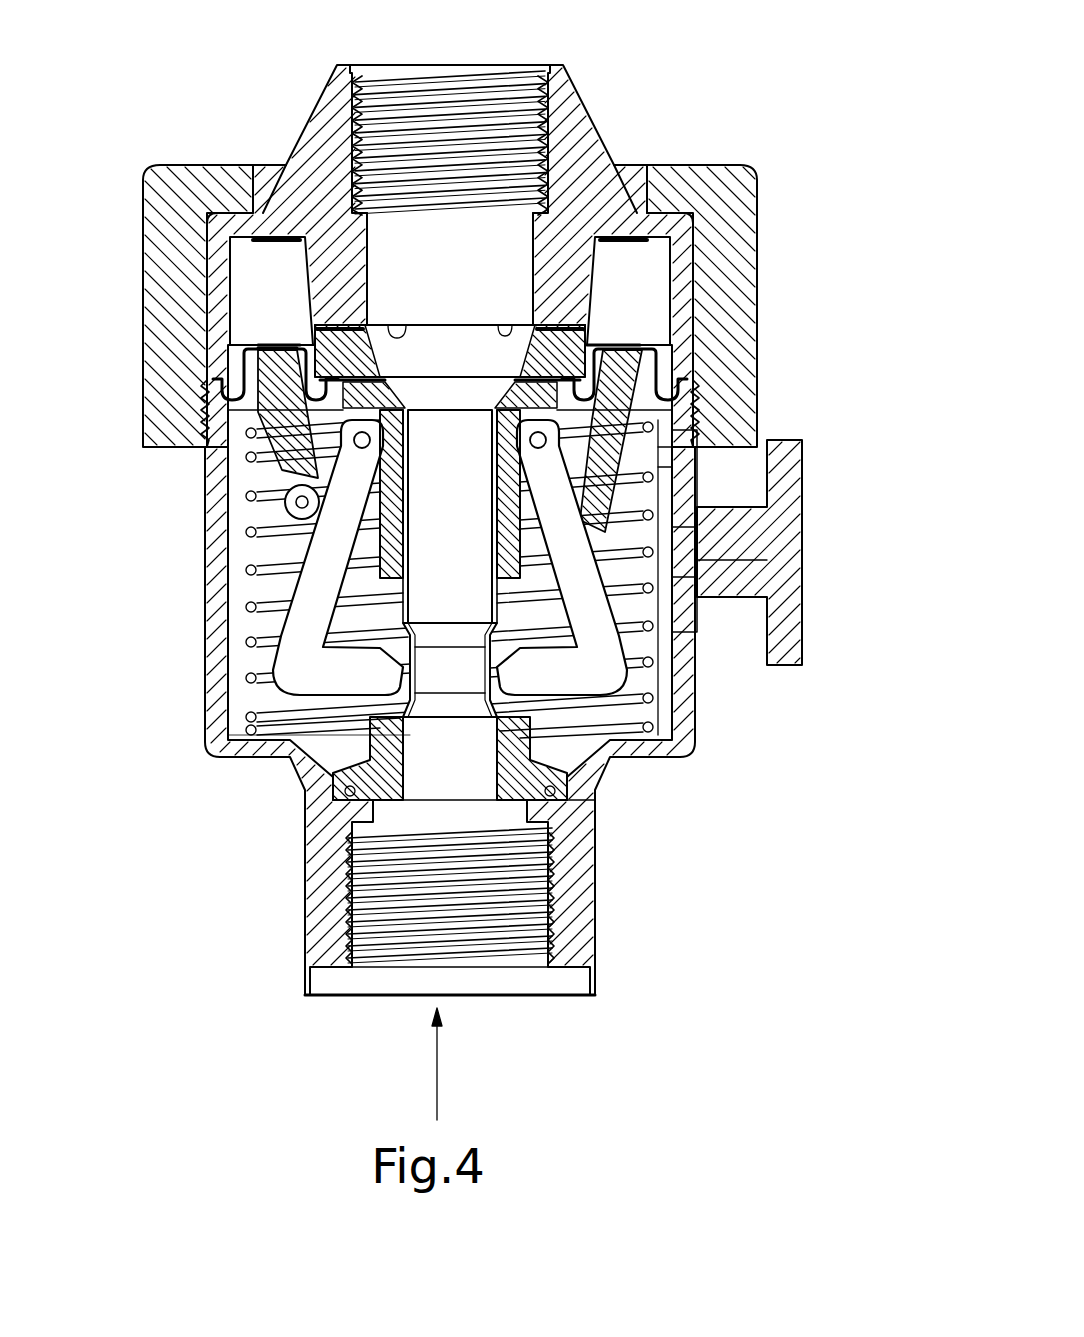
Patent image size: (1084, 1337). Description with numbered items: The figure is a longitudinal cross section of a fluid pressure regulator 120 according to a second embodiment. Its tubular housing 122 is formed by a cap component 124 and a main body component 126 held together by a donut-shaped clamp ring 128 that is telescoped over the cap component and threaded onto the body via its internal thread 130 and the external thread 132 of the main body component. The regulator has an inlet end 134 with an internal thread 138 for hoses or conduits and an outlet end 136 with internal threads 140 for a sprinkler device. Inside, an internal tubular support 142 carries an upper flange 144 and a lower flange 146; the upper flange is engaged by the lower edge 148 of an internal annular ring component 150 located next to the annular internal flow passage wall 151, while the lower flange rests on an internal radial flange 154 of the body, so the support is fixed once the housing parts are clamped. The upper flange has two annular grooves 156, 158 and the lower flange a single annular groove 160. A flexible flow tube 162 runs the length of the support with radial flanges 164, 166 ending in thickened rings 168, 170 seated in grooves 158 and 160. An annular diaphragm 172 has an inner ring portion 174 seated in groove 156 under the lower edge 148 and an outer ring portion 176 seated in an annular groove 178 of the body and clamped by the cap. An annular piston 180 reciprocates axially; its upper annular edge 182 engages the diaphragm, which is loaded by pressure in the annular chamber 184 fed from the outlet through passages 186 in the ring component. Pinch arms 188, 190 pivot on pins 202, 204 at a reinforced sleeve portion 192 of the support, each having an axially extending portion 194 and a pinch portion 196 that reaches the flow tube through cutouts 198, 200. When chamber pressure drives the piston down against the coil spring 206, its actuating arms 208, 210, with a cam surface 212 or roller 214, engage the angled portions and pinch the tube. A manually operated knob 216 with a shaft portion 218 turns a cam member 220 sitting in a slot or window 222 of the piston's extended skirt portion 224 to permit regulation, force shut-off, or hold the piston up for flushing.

The fluid pressure regulator 120 is at (768, 130).
The tubular housing 122 is at (850, 416).
The cap component 124 is at (683, 292).
The main body component 126 is at (687, 637).
The clamp ring 128 is at (737, 327).
The internal thread 130 is at (690, 397).
The external thread 132 is at (198, 428).
The inlet end 134 is at (500, 990).
The outlet end 136 is at (483, 68).
The internal thread 138 is at (580, 927).
The internal threads 140 is at (388, 95).
The internal tubular support 142 is at (497, 525).
The upper flange 144 is at (395, 377).
The lower flange 146 is at (330, 778).
The lower edge 148 is at (205, 398).
The internal annular ring component 150 is at (537, 330).
The annular internal flow passage wall 151 is at (573, 292).
The internal radial flange 154 is at (593, 798).
The annular groove 156 is at (382, 325).
The annular groove 158 is at (447, 328).
The annular groove 160 is at (347, 795).
The flexible flow tube 162 is at (407, 518).
The radial flange 164 is at (380, 370).
The radial flange 166 is at (335, 868).
The thickened ring 168 is at (416, 328).
The thickened ring 170 is at (550, 816).
The annular diaphragm 172 is at (267, 340).
The inner ring portion 174 is at (312, 345).
The outer ring portion 176 is at (235, 350).
The annular groove 178 is at (700, 370).
The annular piston 180 is at (633, 343).
The upper annular edge 182 is at (607, 343).
The annular chamber 184 is at (240, 262).
The passages 186 is at (327, 313).
The pinch arm 188 is at (277, 587).
The pinch arm 190 is at (683, 627).
The reinforced sleeve portion 192 is at (515, 401).
The axially extending portion 194 is at (517, 582).
The pinch portion 196 is at (600, 668).
The cutout 198 is at (393, 607).
The cutout 200 is at (500, 612).
The pin 202 is at (400, 437).
The pin 204 is at (533, 443).
The coil spring 206 is at (243, 680).
The actuating arm 208 is at (290, 470).
The actuating arm 210 is at (623, 467).
The cam surface 212 is at (600, 510).
The roller 214 is at (298, 520).
The manually operated knob 216 is at (788, 520).
The shaft portion 218 is at (683, 560).
The cam member 220 is at (697, 487).
The slot or window 222 is at (662, 447).
The extended skirt portion 224 is at (685, 643).